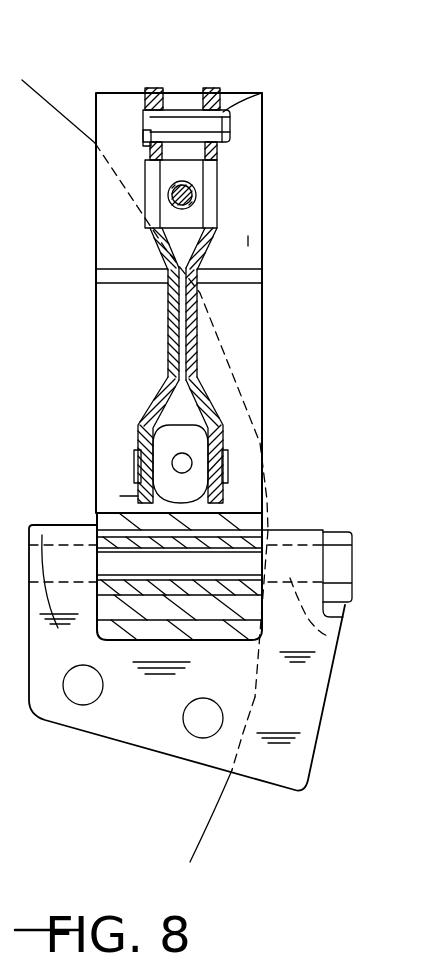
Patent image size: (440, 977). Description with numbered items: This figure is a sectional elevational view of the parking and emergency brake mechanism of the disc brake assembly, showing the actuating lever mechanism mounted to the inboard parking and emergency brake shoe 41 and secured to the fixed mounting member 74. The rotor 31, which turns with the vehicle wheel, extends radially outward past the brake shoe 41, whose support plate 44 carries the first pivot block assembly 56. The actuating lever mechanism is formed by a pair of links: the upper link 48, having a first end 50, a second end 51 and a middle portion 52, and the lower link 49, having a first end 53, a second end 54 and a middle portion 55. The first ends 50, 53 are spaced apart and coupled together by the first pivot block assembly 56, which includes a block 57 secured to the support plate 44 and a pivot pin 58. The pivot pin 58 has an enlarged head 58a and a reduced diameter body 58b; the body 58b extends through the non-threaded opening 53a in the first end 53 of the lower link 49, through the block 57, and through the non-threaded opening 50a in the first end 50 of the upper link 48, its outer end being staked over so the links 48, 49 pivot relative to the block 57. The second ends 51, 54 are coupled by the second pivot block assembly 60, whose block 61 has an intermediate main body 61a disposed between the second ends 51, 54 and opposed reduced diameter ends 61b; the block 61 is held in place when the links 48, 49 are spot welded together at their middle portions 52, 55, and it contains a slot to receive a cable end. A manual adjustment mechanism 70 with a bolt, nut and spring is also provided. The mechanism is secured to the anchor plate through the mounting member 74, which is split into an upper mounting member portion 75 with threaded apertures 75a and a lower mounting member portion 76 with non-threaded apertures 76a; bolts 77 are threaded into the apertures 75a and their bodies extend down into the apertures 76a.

The rotor 31 is at (225, 835).
The inboard parking and emergency brake shoe 41 is at (268, 300).
The support plate 44 is at (248, 241).
The upper link 48 is at (222, 376).
The lower link 49 is at (158, 358).
The first end 50 is at (240, 93).
The non-threaded opening 50a is at (262, 93).
The second end 51 is at (263, 497).
The middle portion 52 is at (209, 367).
The first end 53 is at (152, 96).
The non-threaded opening 53a is at (138, 137).
The second end 54 is at (137, 494).
The middle portion 55 is at (167, 320).
The first pivot block assembly 56 is at (190, 97).
The block 57 is at (220, 152).
The pivot pin 58 is at (136, 105).
The enlarged head 58a is at (143, 123).
The reduced diameter body 58b is at (230, 135).
The second pivot block assembly 60 is at (127, 432).
The block 61 is at (218, 419).
The intermediate main body 61a is at (228, 442).
The reduced diameter ends 61b is at (133, 452).
The manual adjustment mechanism 70 is at (235, 200).
The mounting member 74 is at (297, 713).
The upper mounting member portion 75 is at (330, 533).
The threaded apertures 75a is at (340, 638).
The lower mounting member portion 76 is at (54, 601).
The lower non-threaded apertures 76a is at (63, 535).
The bolts 77 is at (353, 573).